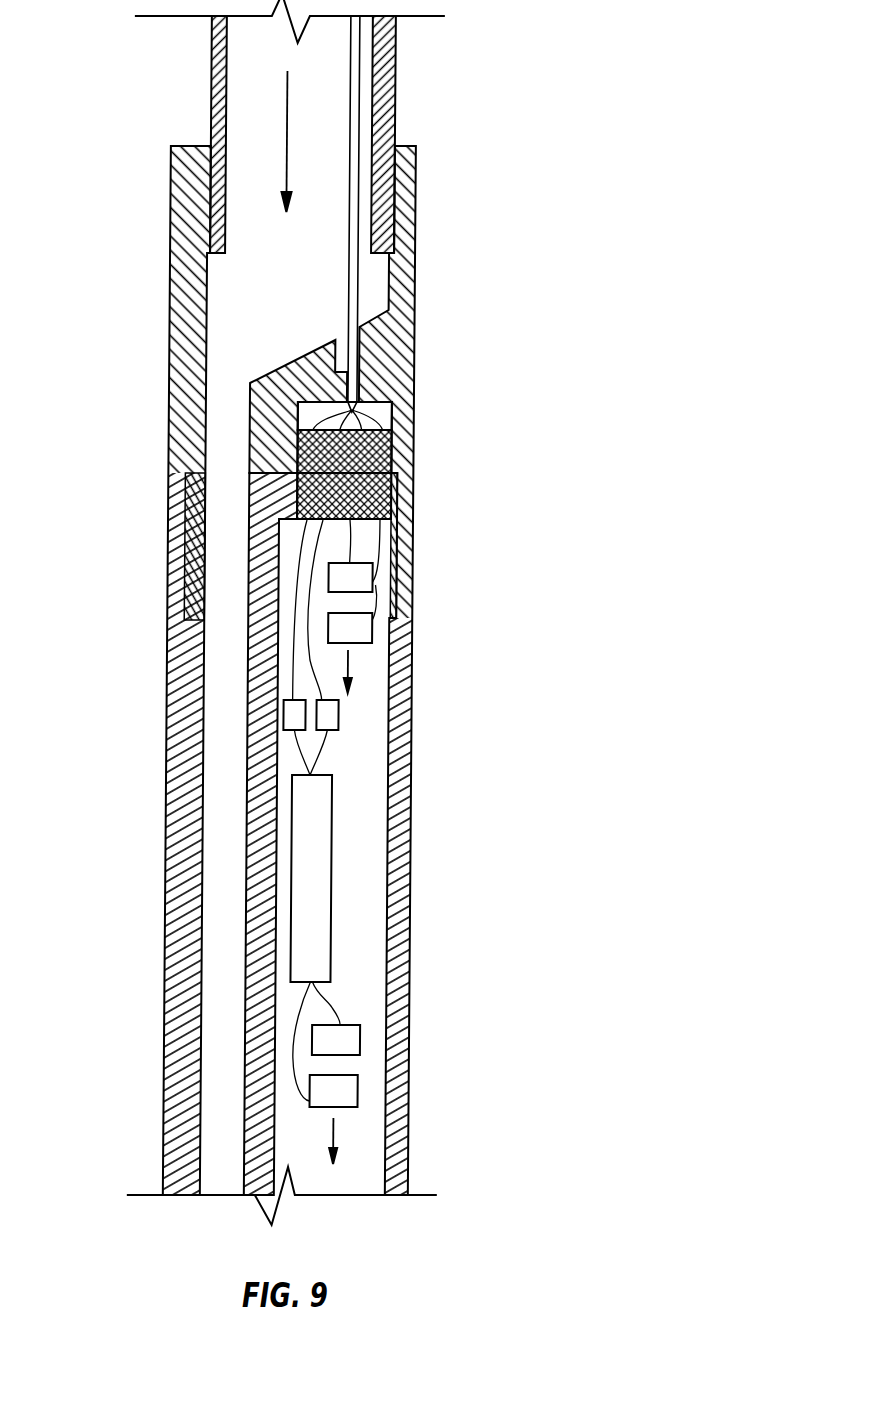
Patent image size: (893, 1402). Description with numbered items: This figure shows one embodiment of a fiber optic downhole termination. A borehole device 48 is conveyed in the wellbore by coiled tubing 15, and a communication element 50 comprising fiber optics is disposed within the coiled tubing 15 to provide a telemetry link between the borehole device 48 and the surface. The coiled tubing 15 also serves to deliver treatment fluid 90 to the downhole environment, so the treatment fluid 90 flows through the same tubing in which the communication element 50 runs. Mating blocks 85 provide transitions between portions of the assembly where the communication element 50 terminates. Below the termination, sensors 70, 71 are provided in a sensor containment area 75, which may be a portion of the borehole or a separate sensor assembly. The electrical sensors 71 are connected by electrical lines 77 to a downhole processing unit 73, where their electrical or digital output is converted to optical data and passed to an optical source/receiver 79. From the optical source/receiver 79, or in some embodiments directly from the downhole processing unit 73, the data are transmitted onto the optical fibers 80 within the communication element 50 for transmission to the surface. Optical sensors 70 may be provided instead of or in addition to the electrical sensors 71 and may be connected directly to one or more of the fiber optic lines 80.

The coiled tubing 15 is at (398, 68).
The borehole device 48 is at (418, 188).
The communication element 50 is at (363, 387).
The optical sensors 70 is at (403, 595).
The electrical sensors 71 is at (366, 1092).
The downhole processing unit 73 is at (340, 875).
The sensor containment area 75 is at (373, 718).
The electrical lines 77 is at (336, 750).
The optical source/receiver 79 is at (322, 713).
The optical fibers 80 is at (390, 422).
The mating blocks 85 is at (312, 453).
The treatment fluid 90 is at (229, 105).